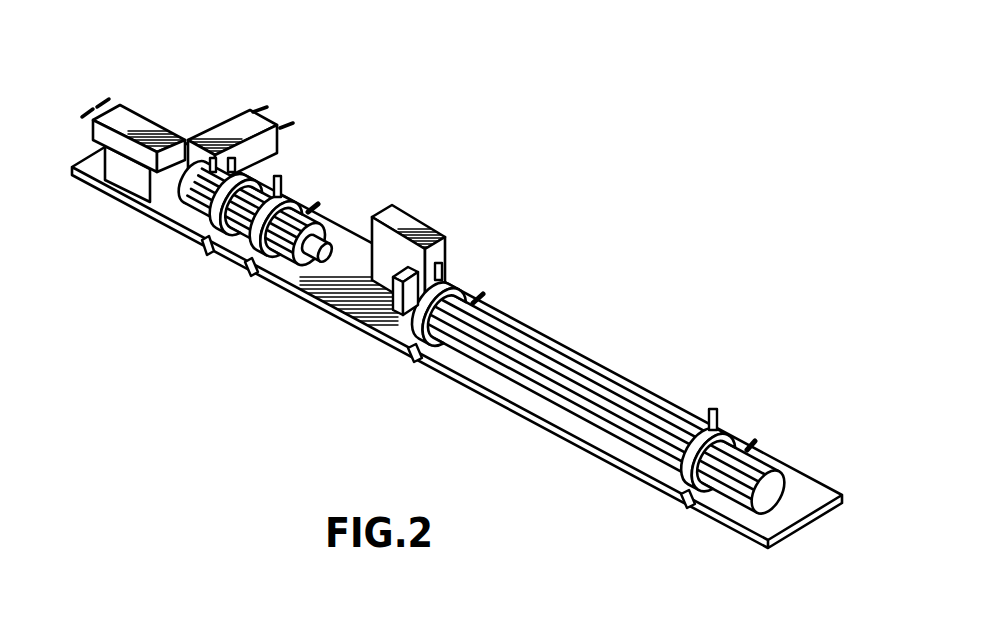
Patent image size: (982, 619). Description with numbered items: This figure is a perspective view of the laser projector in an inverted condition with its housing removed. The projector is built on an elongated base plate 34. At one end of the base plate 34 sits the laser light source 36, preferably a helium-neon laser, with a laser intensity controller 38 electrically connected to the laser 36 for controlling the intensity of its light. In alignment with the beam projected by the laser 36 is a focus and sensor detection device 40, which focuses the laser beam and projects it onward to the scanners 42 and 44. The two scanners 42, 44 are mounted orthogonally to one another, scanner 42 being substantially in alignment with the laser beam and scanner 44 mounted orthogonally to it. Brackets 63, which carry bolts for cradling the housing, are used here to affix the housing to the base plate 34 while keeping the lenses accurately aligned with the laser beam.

The base plate 34 is at (352, 319).
The laser light source 36 is at (497, 392).
The laser intensity controller 38 is at (448, 250).
The focus and sensor detection device 40 is at (278, 266).
The scanner 42 is at (143, 133).
The scanner 44 is at (243, 135).
The brackets 63 is at (268, 178).